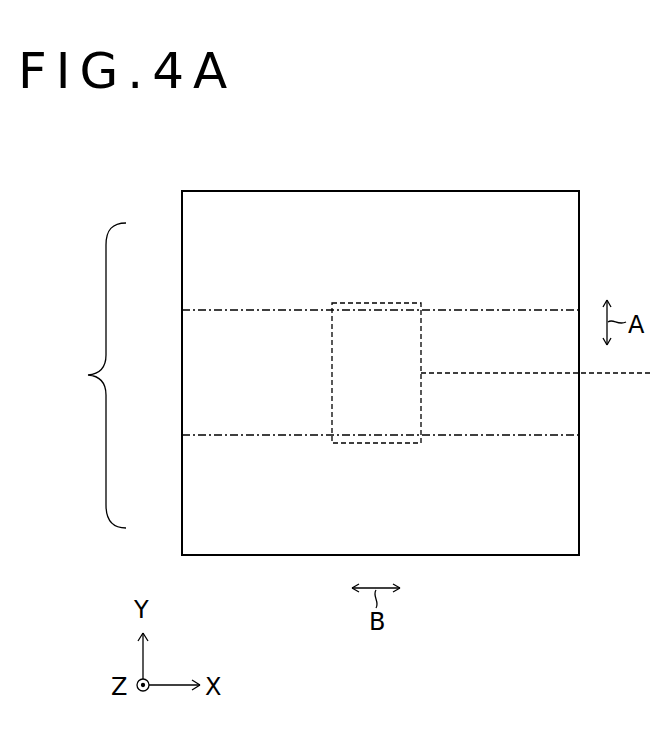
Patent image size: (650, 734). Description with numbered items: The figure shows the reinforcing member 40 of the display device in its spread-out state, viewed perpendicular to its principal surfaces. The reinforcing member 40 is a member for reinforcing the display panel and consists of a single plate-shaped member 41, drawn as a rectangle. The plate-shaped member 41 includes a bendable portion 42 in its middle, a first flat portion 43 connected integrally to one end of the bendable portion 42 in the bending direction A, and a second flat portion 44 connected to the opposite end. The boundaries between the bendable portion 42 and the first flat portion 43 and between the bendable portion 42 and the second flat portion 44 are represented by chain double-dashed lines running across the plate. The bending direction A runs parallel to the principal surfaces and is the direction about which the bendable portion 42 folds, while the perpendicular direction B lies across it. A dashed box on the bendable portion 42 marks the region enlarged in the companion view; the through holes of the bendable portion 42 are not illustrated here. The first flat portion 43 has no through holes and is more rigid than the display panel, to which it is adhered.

The reinforcing member 40 is at (182, 168).
The plate-shaped member 41 is at (89, 375).
The bendable portion 42 is at (198, 371).
The first flat portion 43 is at (198, 501).
The second flat portion 44 is at (198, 244).